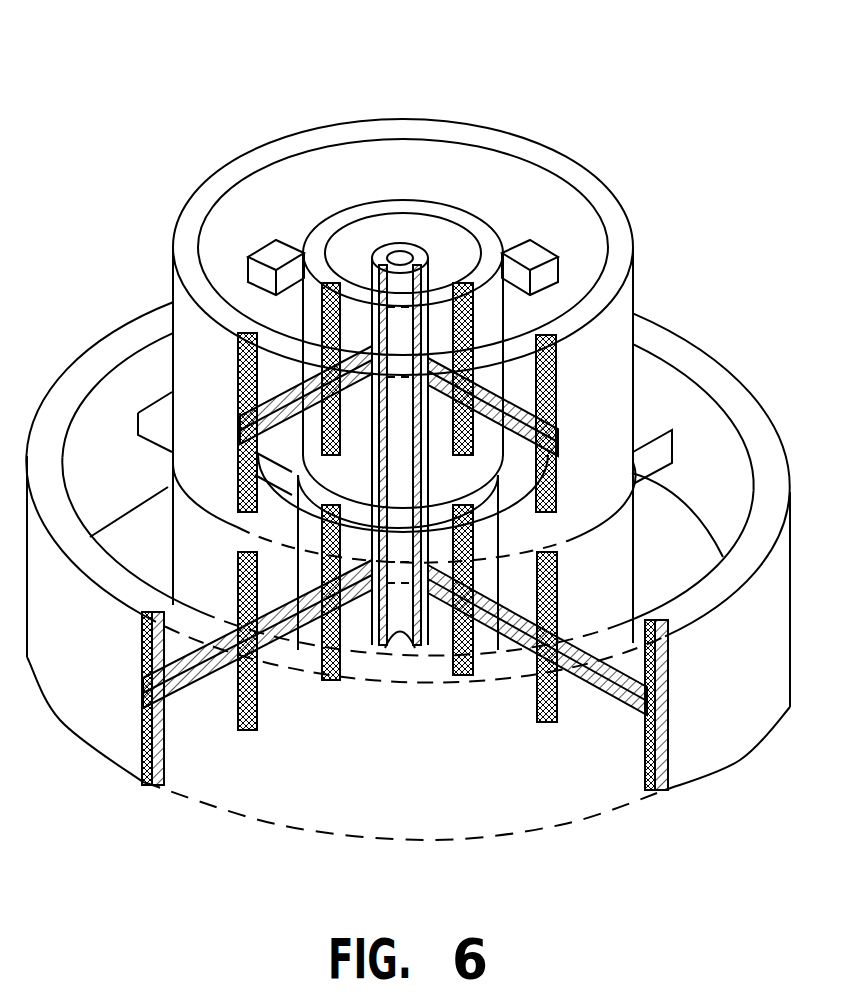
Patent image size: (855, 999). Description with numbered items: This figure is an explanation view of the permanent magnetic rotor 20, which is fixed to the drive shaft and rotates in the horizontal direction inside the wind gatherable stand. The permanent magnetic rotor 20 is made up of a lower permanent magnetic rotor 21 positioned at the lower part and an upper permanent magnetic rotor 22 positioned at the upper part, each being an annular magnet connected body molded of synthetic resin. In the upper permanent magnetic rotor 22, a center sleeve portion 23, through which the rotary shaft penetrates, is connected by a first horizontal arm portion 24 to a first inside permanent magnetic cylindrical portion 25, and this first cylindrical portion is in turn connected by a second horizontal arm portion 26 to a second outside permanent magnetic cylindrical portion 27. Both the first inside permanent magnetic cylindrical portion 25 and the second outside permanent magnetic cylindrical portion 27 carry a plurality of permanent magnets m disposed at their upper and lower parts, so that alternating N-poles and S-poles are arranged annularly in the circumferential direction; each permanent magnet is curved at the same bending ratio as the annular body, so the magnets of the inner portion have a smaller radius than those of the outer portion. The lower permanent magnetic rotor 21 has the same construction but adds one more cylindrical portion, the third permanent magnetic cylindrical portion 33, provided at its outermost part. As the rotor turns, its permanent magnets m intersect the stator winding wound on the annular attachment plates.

The permanent magnetic rotor 20 is at (660, 128).
The lower permanent magnetic rotor 21 is at (420, 563).
The upper permanent magnetic rotor 22 is at (554, 126).
The center sleeve portion 23 is at (352, 248).
The first horizontal arm portion 24 is at (420, 444).
The first inside permanent magnetic cylindrical portion 25 is at (387, 212).
The second horizontal arm portion 26 is at (266, 247).
The second outside permanent magnetic cylindrical portion 27 is at (625, 310).
The permanent magnets m is at (322, 335).
The third permanent magnetic cylindrical portion 33 is at (716, 738).